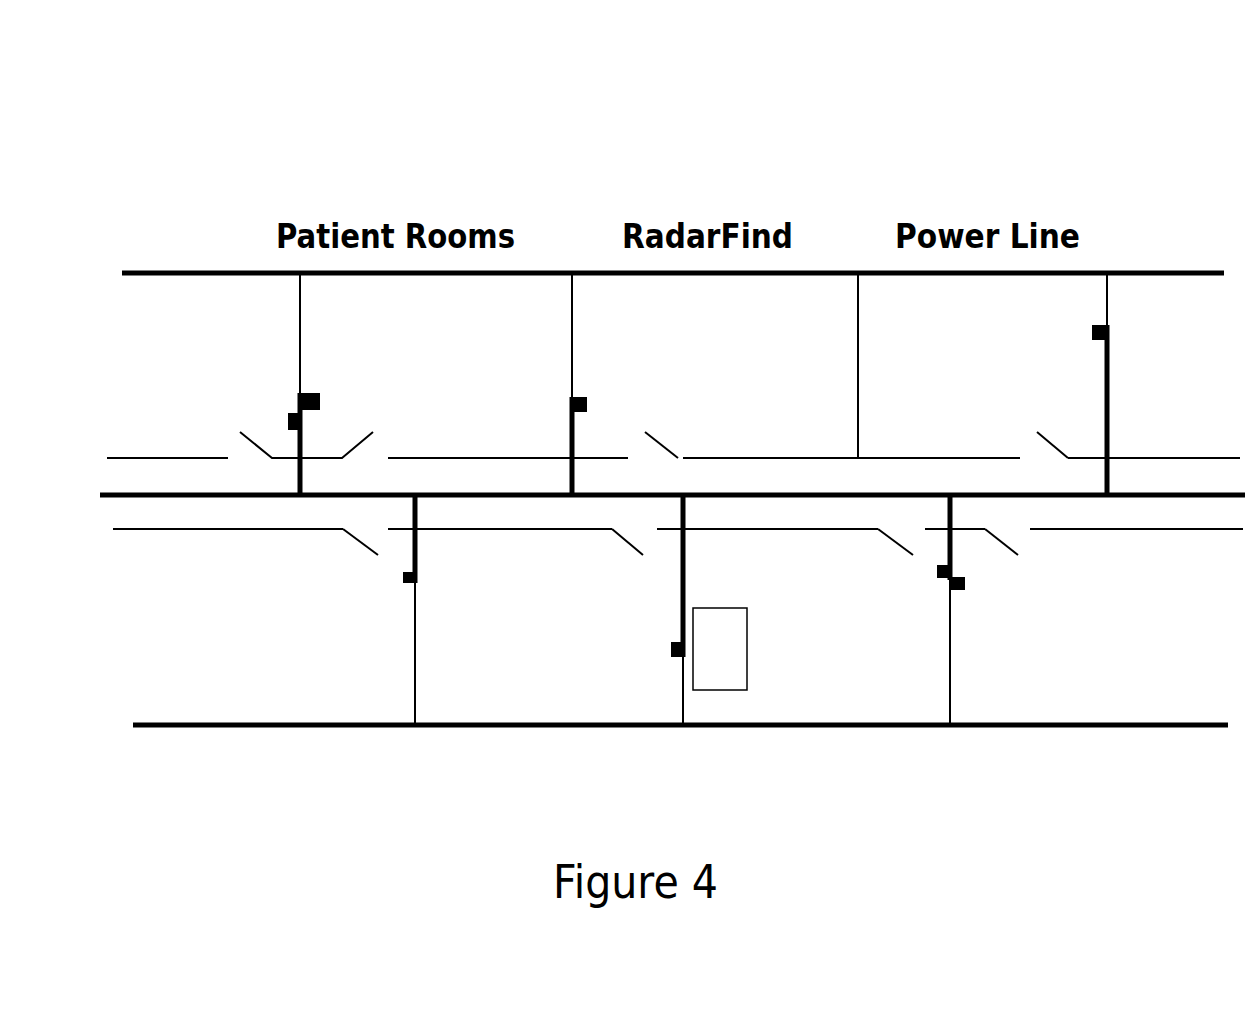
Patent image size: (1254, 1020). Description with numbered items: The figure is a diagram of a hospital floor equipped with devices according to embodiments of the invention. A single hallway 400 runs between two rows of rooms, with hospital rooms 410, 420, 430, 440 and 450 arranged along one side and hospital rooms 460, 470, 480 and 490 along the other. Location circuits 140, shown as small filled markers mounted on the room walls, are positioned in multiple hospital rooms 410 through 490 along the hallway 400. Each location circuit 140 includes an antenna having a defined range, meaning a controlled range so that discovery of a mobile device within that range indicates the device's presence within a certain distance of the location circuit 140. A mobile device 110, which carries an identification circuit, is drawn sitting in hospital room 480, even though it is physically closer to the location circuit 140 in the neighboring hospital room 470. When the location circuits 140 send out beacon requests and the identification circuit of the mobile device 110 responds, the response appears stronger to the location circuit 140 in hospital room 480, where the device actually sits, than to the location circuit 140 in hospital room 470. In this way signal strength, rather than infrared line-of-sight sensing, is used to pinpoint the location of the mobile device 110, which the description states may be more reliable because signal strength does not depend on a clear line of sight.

The hallway 400 is at (628, 92).
The hospital room 410 is at (240, 374).
The hospital room 420 is at (508, 374).
The hospital room 430 is at (751, 372).
The hospital room 440 is at (963, 374).
The hospital room 450 is at (1154, 378).
The hospital room 460 is at (264, 623).
The hospital room 470 is at (549, 618).
The hospital room 480 is at (816, 624).
The hospital room 490 is at (1096, 621).
The location circuit 140 is at (305, 395).
The mobile device 110 is at (720, 649).